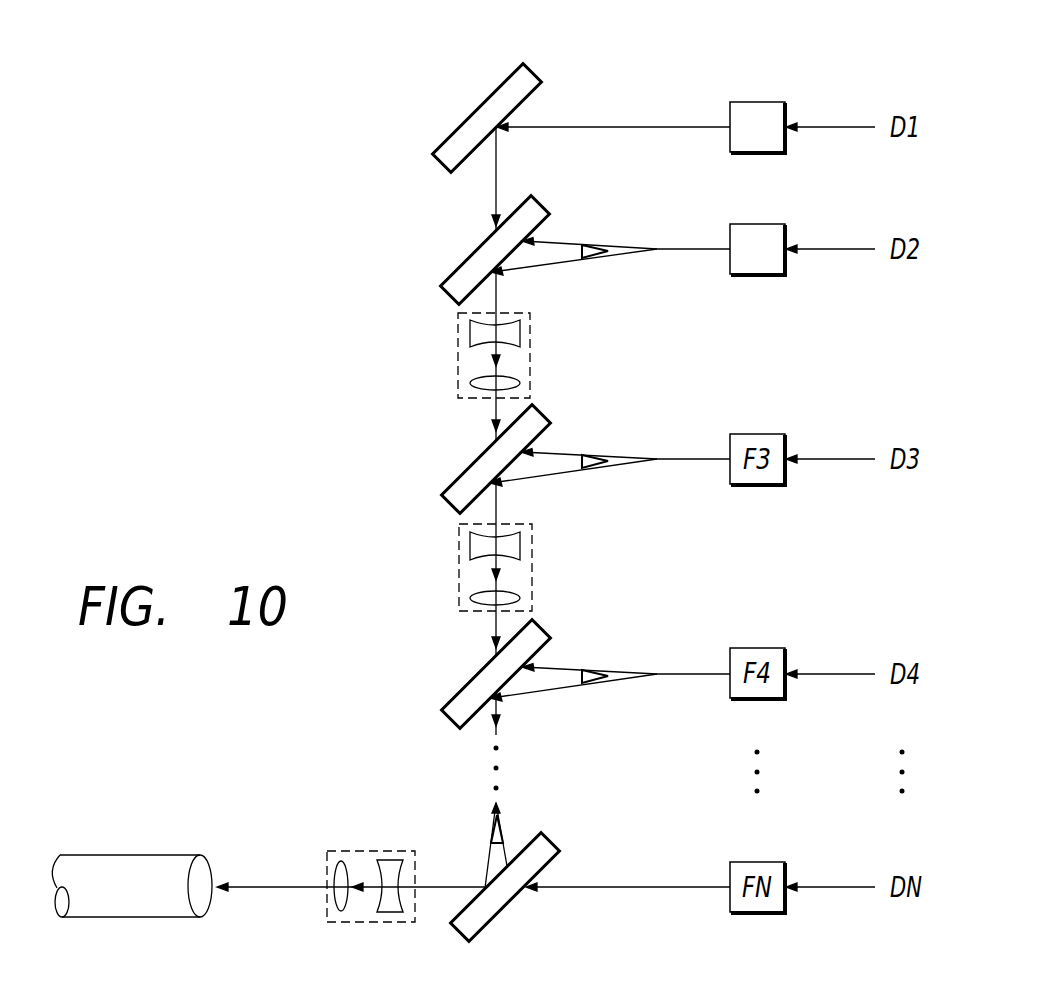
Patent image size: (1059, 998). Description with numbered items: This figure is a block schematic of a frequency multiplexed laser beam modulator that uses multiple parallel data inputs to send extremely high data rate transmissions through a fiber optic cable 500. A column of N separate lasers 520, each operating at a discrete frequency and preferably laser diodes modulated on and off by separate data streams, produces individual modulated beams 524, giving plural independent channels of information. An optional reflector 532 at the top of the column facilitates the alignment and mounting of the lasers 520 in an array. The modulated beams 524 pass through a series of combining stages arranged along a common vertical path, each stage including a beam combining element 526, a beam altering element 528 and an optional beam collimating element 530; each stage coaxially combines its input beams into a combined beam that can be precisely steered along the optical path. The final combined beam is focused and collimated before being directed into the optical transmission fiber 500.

The fiber optic cable 500 is at (142, 855).
The laser 520 is at (748, 102).
The modulated beam 524 is at (614, 124).
The beam combining element 526 is at (467, 258).
The beam altering element 528 is at (588, 258).
The beam collimating element 530 is at (458, 344).
The reflector 532 is at (492, 92).